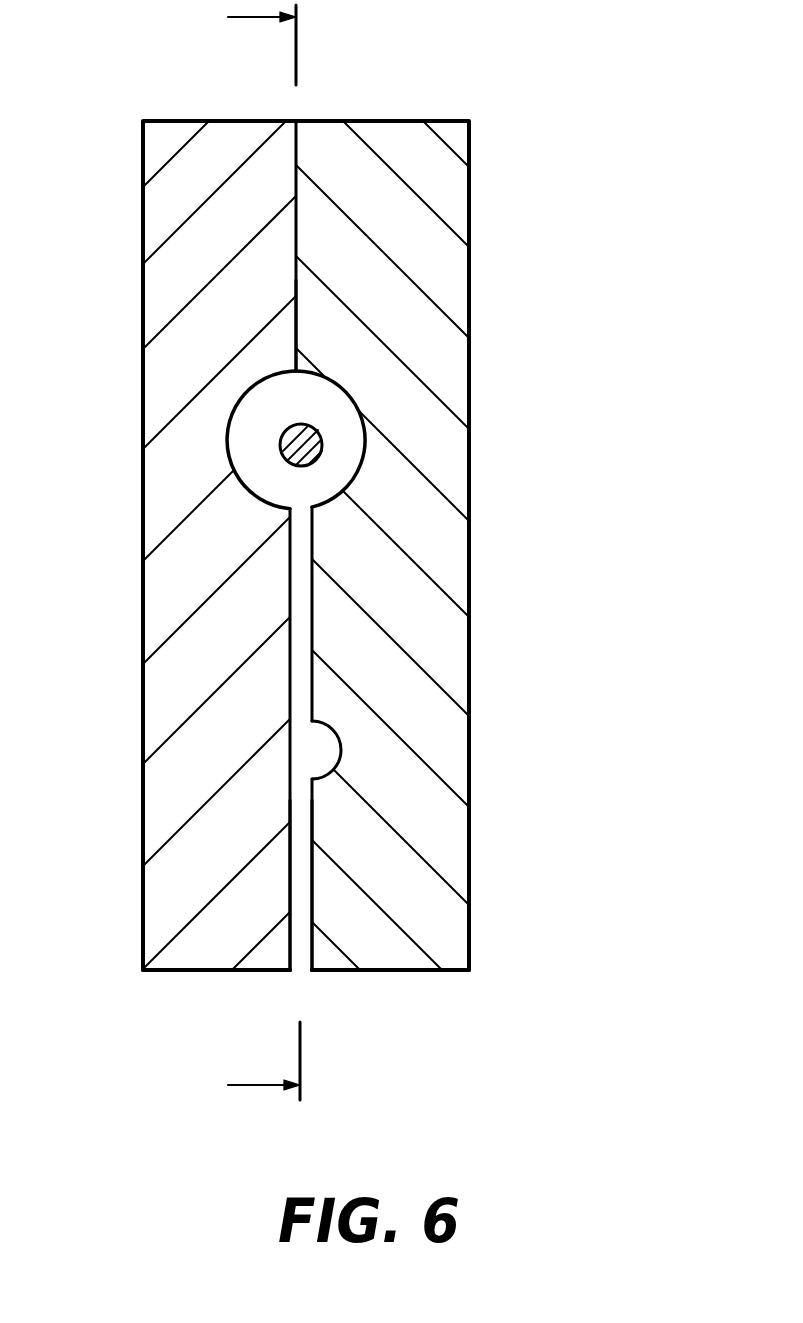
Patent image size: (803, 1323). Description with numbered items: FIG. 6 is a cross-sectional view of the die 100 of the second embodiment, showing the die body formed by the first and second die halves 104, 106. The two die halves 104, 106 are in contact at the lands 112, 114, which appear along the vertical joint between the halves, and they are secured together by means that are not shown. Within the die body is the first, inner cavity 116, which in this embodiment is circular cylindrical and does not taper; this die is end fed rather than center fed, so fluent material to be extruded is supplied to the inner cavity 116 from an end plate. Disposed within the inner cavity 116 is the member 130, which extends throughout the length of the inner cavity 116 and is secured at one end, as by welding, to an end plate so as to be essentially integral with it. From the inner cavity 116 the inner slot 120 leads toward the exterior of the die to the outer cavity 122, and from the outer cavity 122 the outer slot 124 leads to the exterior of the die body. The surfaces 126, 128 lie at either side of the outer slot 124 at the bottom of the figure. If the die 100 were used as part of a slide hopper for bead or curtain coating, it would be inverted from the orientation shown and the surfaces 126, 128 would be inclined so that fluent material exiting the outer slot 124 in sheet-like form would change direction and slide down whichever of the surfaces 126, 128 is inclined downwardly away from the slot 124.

The die 100 is at (357, 553).
The first die half 104 is at (143, 208).
The second die half 106 is at (470, 195).
The land 112 is at (296, 257).
The land 114 is at (298, 287).
The inner cavity 116 is at (345, 418).
The inner slot 120 is at (300, 585).
The outer cavity 122 is at (322, 738).
The outer slot 124 is at (303, 877).
The surface 126 is at (208, 973).
The surface 128 is at (407, 973).
The member 130 is at (302, 430).